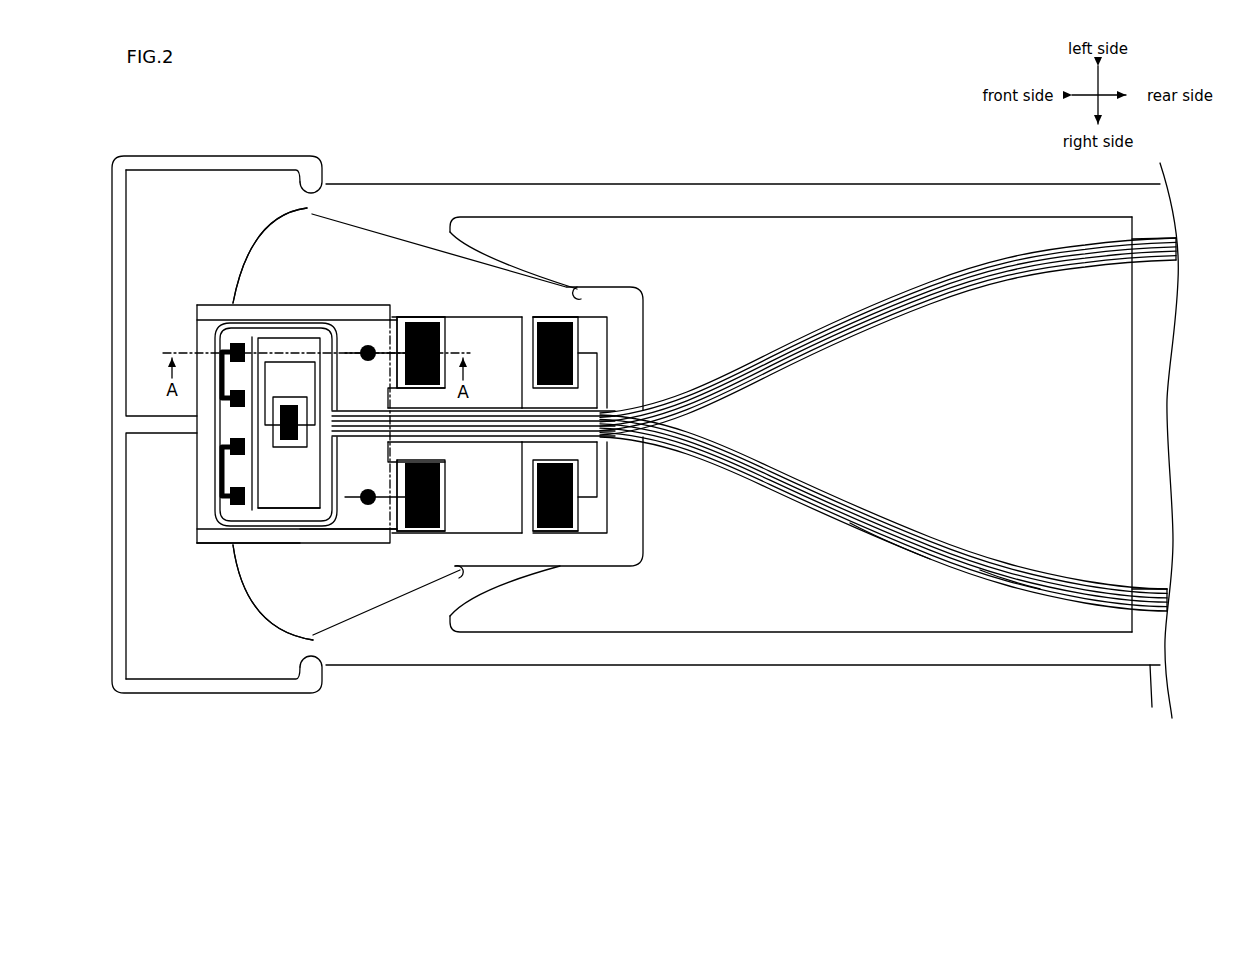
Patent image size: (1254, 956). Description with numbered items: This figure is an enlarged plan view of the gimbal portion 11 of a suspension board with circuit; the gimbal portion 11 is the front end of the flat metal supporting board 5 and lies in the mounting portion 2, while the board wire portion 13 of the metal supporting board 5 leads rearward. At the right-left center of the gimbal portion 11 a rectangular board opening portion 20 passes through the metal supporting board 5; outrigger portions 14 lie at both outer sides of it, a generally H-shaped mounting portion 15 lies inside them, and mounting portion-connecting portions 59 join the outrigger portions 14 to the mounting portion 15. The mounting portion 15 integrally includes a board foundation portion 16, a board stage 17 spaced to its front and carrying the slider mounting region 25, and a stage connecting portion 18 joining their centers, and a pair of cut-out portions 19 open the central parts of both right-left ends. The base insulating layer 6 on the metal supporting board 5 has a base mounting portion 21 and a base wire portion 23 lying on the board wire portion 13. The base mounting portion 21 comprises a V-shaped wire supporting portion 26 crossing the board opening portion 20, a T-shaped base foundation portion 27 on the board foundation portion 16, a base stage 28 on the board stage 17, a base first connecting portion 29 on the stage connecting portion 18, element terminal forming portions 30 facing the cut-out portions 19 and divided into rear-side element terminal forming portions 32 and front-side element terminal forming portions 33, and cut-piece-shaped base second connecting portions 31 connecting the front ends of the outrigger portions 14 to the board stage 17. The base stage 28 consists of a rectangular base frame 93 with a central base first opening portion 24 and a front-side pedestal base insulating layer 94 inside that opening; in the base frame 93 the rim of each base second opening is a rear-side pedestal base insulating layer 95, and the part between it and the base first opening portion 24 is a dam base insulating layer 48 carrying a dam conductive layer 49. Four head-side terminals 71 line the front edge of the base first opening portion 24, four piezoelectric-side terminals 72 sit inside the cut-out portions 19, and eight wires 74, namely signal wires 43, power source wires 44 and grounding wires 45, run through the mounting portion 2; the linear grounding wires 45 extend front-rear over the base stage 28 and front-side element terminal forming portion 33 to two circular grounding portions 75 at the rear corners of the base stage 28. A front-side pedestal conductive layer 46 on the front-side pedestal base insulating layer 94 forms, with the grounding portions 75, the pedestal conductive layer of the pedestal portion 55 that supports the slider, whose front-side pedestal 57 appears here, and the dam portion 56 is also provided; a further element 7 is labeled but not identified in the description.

The mounting portion 2 is at (661, 777).
The metal supporting board 5 is at (1181, 200).
The base insulating layer 6 is at (1152, 264).
The wire bundle 7 is at (1182, 250).
The gimbal portion 11 is at (706, 678).
The board wire portion 13 is at (1149, 695).
The outrigger portions 14 is at (776, 183).
The mounting portion 15 is at (650, 372).
The board foundation portion 16 is at (648, 520).
The board stage 17 is at (196, 340).
The stage connecting portion 18 is at (464, 442).
The cut-out portions 19 is at (588, 290).
The board opening portion 20 is at (1133, 398).
The base mounting portion 21 is at (906, 552).
The base wire portion 23 is at (1150, 607).
The base first opening portion 24 is at (281, 458).
The slider mounting region 25 is at (353, 540).
The wire supporting portion 26 is at (1000, 562).
The base foundation portion 27 is at (600, 540).
The base stage 28 is at (340, 540).
The base first connecting portion 29 is at (497, 441).
The element terminal forming portions 30 is at (522, 435).
The base second connecting portions 31 is at (244, 262).
The rear-side element terminal forming portions 32 is at (562, 318).
The front-side element terminal forming portions 33 is at (418, 318).
The signal wires 43 is at (217, 325).
The power source wires 44 is at (646, 366).
The grounding wires 45 is at (400, 327).
The front-side pedestal conductive layer 46 is at (268, 382).
The dam base insulating layer 48 is at (313, 318).
The dam conductive layer 49 is at (291, 322).
The pedestal portion 55 is at (366, 364).
The dam portion 56 is at (326, 440).
The front-side pedestal 57 is at (236, 540).
The mounting portion-connecting portions 59 is at (578, 318).
The head-side terminals 71 is at (233, 360).
The piezoelectric-side terminals 72 is at (553, 318).
The wires 74 is at (977, 293).
The grounding portions 75 is at (368, 345).
The base frame 93 is at (330, 540).
The front-side pedestal base insulating layer 94 is at (282, 450).
The rear-side pedestal base insulating layer 95 is at (357, 327).